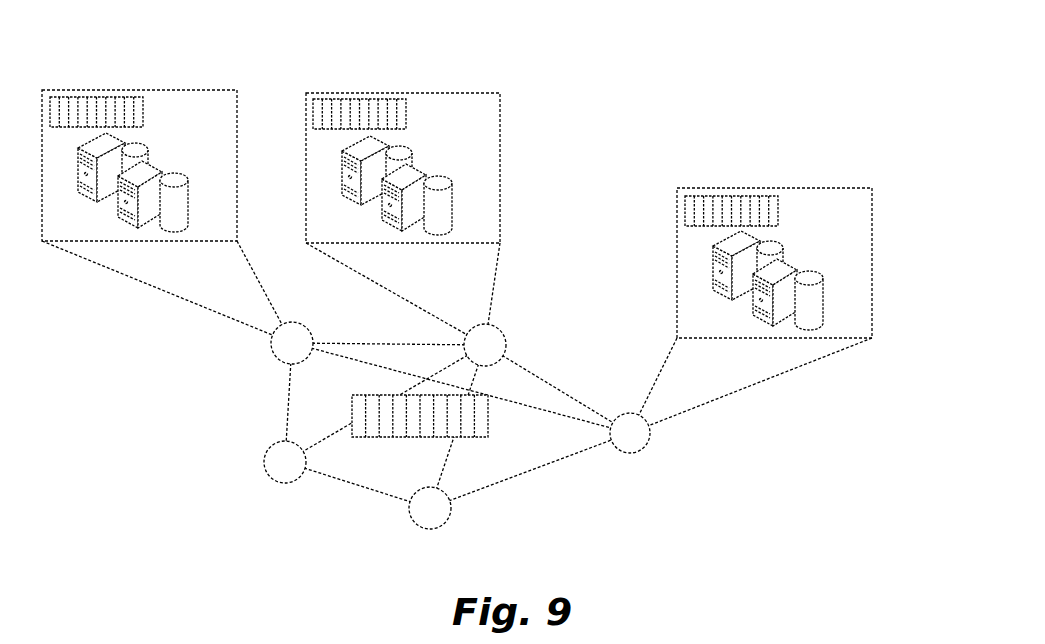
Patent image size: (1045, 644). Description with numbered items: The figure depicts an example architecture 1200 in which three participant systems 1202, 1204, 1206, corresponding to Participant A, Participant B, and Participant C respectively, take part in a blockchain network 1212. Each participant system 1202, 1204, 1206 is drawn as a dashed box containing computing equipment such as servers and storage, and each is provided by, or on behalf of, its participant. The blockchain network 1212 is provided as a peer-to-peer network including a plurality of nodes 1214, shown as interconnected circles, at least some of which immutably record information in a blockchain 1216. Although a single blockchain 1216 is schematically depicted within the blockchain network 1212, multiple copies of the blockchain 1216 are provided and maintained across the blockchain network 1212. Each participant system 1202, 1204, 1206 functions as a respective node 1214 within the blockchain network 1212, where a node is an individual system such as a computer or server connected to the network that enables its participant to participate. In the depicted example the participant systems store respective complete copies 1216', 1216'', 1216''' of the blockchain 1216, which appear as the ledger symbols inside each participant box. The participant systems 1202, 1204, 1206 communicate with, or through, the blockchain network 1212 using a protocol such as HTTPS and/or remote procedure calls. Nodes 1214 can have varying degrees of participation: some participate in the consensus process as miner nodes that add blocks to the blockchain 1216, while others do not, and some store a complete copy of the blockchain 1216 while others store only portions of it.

The example architecture 1200 is at (831, 74).
The participant system 1202 is at (235, 89).
The participant system 1204 is at (500, 106).
The participant system 1206 is at (873, 207).
The blockchain network 1212 is at (208, 338).
The node 1214 is at (308, 328).
The blockchain 1216 is at (420, 438).
The copy of the blockchain 1216' is at (141, 84).
The copy of the blockchain 1216'' is at (401, 89).
The copy of the blockchain 1216''' is at (773, 187).